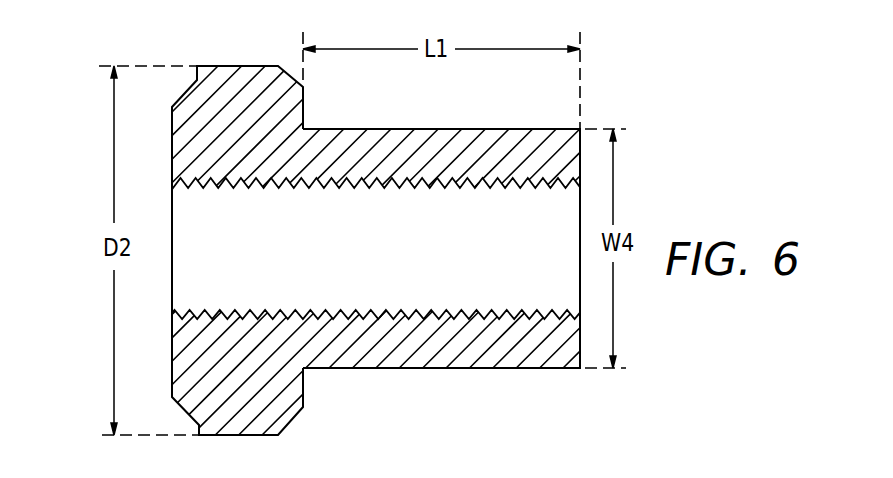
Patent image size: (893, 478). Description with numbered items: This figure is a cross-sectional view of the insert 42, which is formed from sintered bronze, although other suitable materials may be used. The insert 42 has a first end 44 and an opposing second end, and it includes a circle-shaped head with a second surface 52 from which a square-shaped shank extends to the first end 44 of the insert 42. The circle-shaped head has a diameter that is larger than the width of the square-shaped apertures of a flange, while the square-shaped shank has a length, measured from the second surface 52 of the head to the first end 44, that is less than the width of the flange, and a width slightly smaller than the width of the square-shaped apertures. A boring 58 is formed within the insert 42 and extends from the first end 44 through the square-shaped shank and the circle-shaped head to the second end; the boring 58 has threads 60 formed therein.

The insert 42 is at (99, 49).
The first end 44 is at (580, 370).
The second surface 52 is at (305, 402).
The boring 58 is at (417, 241).
The threads 60 is at (493, 298).